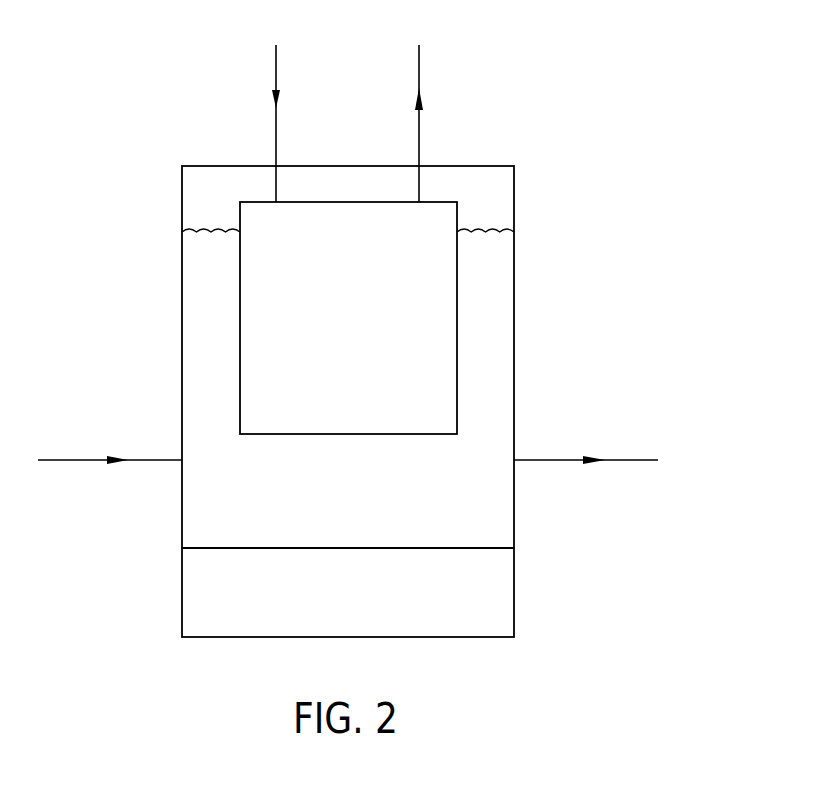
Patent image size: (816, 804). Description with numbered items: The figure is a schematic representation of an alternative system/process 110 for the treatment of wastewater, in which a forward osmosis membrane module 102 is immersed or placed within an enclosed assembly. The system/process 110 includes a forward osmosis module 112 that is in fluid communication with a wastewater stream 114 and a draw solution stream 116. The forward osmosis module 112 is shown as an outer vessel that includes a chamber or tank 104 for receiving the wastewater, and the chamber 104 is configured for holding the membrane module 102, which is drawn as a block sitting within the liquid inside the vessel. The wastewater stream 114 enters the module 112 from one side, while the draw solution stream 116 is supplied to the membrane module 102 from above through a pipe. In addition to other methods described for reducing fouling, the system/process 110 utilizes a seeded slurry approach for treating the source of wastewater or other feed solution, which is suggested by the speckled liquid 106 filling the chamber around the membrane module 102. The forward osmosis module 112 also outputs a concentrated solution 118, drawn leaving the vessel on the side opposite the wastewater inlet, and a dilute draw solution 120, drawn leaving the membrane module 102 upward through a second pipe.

The forward osmosis membrane module 102 is at (363, 322).
The chamber 104 is at (445, 637).
The liquid coolant 106 is at (484, 340).
The system/process 110 is at (110, 90).
The forward osmosis module 112 is at (520, 190).
The wastewater stream 114 is at (73, 460).
The draw solution stream 116 is at (275, 66).
The concentrated solution 118 is at (623, 460).
The dilute draw solution 120 is at (420, 66).